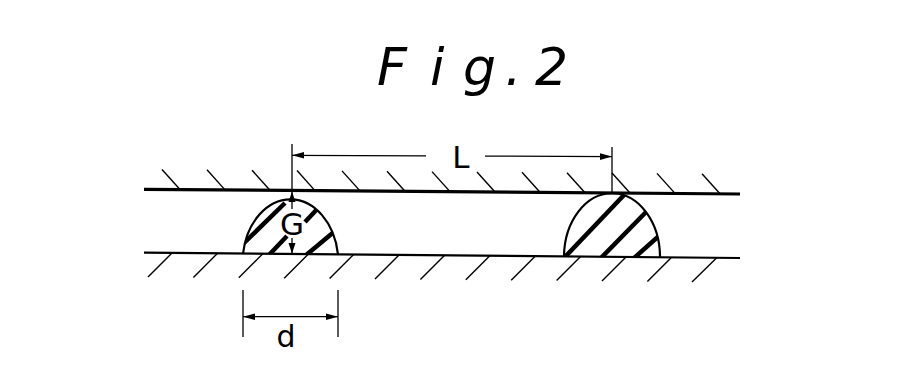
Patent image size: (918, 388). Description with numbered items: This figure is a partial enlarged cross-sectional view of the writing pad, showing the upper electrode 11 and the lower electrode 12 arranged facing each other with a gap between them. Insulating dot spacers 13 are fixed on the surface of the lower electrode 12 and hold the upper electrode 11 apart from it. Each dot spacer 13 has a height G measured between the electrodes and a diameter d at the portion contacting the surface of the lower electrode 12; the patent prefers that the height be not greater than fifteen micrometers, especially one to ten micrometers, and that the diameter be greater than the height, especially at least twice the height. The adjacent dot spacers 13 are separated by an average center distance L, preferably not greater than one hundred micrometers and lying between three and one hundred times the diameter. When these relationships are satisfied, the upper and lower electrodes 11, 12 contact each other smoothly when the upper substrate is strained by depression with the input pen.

The upper electrode 11 is at (676, 182).
The lower electrode 12 is at (698, 272).
The insulating dot spacer 13 is at (655, 220).